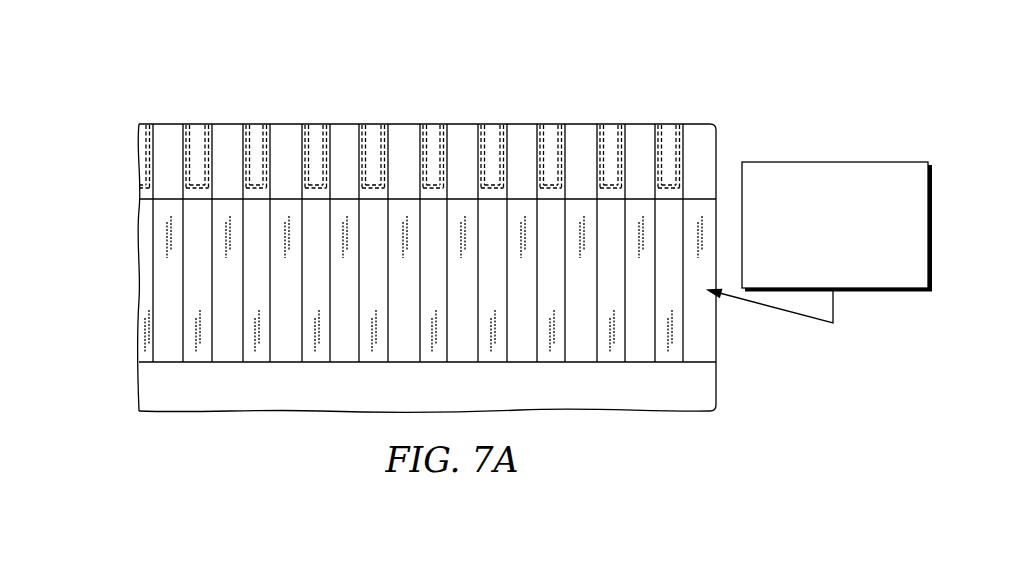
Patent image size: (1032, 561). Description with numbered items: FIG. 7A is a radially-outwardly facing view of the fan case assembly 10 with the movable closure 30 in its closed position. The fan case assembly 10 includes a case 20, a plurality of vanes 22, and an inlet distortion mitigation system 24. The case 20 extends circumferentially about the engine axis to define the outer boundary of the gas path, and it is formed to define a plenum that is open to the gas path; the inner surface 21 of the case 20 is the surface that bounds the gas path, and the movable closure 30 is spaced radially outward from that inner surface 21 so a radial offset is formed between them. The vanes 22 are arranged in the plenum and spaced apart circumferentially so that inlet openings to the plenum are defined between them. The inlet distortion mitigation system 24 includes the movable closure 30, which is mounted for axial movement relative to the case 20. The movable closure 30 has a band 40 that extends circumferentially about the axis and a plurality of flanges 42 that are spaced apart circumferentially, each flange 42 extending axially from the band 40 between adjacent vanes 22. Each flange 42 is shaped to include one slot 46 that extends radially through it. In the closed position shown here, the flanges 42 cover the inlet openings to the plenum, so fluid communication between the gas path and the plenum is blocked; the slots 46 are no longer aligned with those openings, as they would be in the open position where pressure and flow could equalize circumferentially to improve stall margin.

The fan case assembly 10 is at (95, 79).
The case 20 is at (736, 145).
The inner surface 21 is at (698, 158).
The vanes 22 is at (576, 198).
The inlet distortion mitigation system 24 is at (820, 115).
The movable closure 30 is at (882, 162).
The band 40 is at (680, 388).
The flanges 42 is at (689, 306).
The slots 46 is at (417, 141).